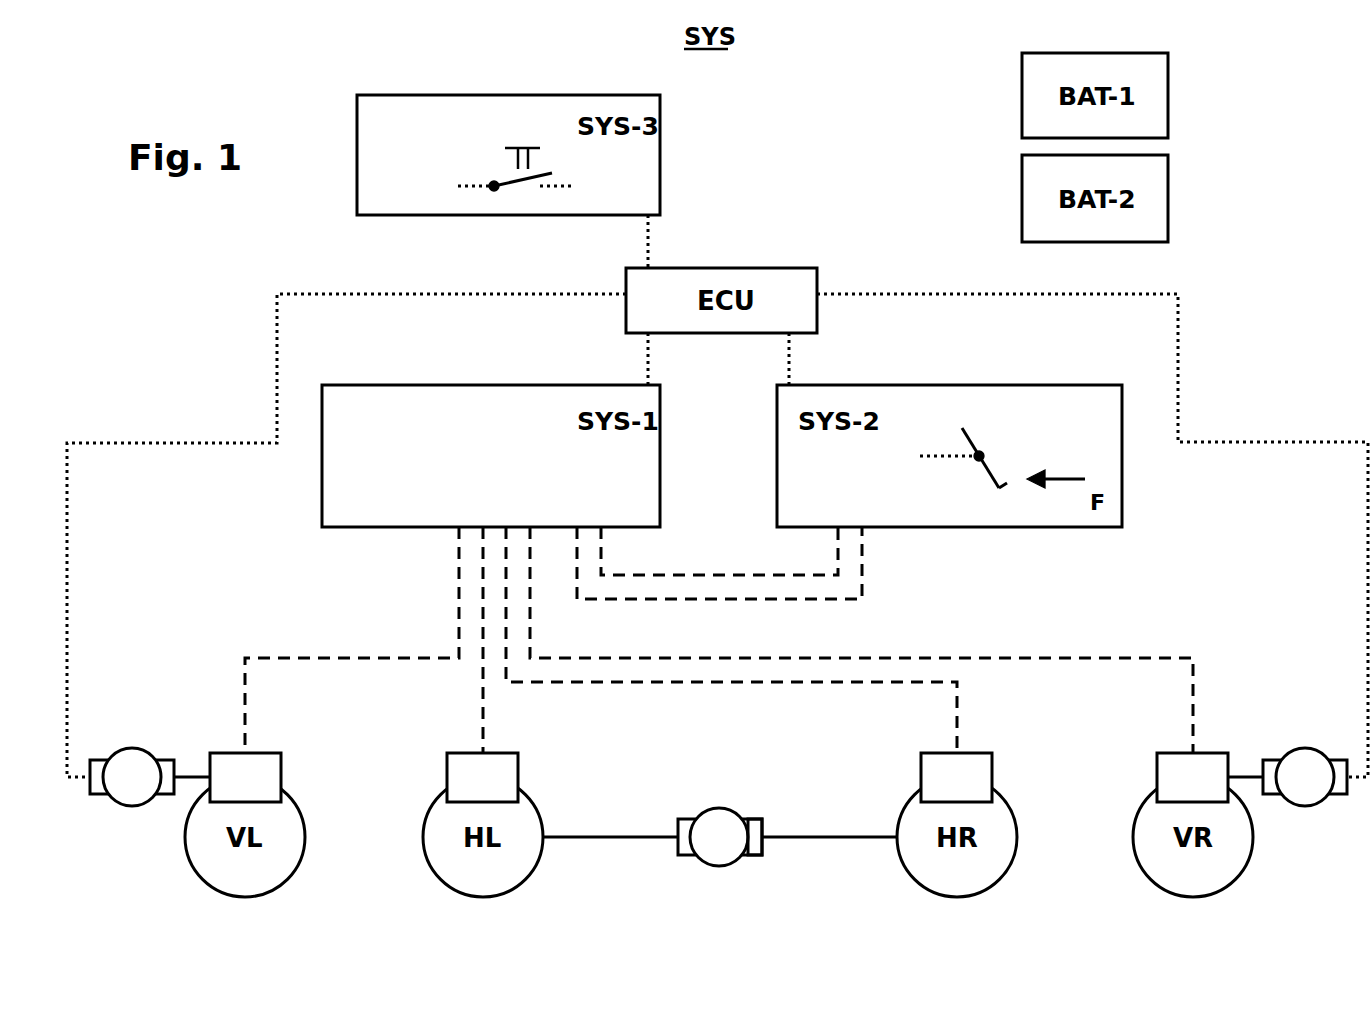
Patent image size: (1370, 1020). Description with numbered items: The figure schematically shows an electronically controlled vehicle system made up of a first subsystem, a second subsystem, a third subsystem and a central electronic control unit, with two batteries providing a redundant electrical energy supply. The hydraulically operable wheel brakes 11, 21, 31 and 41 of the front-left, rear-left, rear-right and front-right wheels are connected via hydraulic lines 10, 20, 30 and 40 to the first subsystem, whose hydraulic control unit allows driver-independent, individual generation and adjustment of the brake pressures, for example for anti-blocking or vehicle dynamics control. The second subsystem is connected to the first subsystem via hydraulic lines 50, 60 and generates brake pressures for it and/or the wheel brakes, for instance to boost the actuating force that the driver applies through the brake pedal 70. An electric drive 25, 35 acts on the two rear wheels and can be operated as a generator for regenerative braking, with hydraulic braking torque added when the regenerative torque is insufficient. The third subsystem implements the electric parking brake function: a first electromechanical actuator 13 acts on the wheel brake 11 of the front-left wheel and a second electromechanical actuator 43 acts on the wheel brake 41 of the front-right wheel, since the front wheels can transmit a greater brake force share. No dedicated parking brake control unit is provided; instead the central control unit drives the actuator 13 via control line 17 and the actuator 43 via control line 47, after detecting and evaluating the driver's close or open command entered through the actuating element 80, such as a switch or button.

The hydraulic line 10 is at (273, 658).
The wheel brake 11 is at (209, 750).
The electromechanical actuator 13 is at (103, 750).
The control line 17 is at (127, 443).
The hydraulic line 20 is at (480, 718).
The wheel brake 21 is at (450, 753).
The electric drive 25 is at (670, 833).
The hydraulic line 30 is at (962, 718).
The wheel brake 31 is at (990, 753).
The electric drive 35 is at (768, 833).
The hydraulic line 40 is at (1167, 663).
The wheel brake 41 is at (1228, 750).
The electromechanical actuator 43 is at (1335, 750).
The control line 47 is at (1311, 443).
The hydraulic line 50 is at (703, 575).
The hydraulic line 60 is at (862, 577).
The brake pedal 70 is at (987, 467).
The actuating element 80 is at (491, 182).